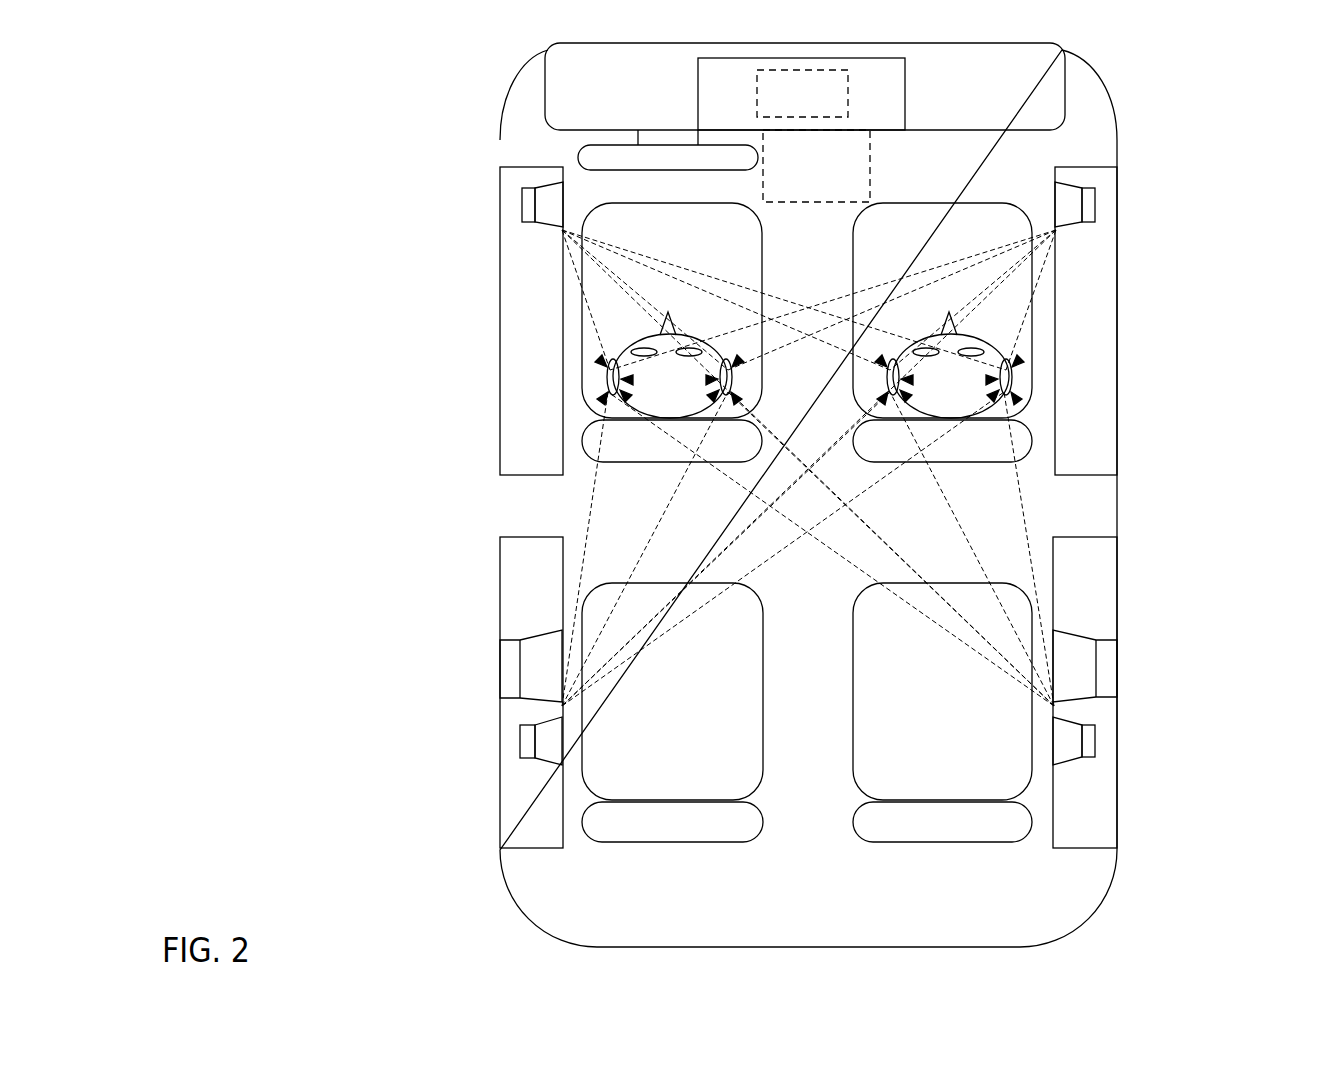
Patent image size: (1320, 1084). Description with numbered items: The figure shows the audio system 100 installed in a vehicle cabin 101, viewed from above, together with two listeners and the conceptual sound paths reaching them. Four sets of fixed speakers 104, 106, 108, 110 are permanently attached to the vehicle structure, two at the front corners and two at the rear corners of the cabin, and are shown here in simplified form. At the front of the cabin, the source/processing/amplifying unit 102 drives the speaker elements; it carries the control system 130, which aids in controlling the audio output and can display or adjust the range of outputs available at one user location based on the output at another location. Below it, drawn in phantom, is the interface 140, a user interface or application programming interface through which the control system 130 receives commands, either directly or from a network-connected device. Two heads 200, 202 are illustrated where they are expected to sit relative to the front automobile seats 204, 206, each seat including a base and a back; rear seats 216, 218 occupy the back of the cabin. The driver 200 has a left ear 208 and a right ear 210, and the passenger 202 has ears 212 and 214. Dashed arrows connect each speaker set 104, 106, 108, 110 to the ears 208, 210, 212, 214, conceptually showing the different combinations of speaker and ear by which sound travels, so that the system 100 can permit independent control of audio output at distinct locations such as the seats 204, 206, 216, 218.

The audio system 100 is at (310, 145).
The vehicle cabin 101 is at (784, 620).
The source/processing/amplifying unit 102 is at (892, 98).
The set of speakers 104 is at (466, 165).
The set of speakers 106 is at (1151, 165).
The set of speakers 108 is at (466, 693).
The set of speakers 110 is at (1151, 683).
The control system 130 is at (845, 108).
The interface 140 is at (838, 192).
The head of driver 200 is at (650, 402).
The head of passenger 202 is at (931, 402).
The automobile seat 204 is at (694, 251).
The automobile seat 206 is at (867, 251).
The left ear 208 is at (605, 378).
The right ear 210 is at (733, 398).
The left ear 212 is at (892, 395).
The right ear 214 is at (1012, 398).
The rear seat 216 is at (690, 767).
The rear seat 218 is at (877, 767).